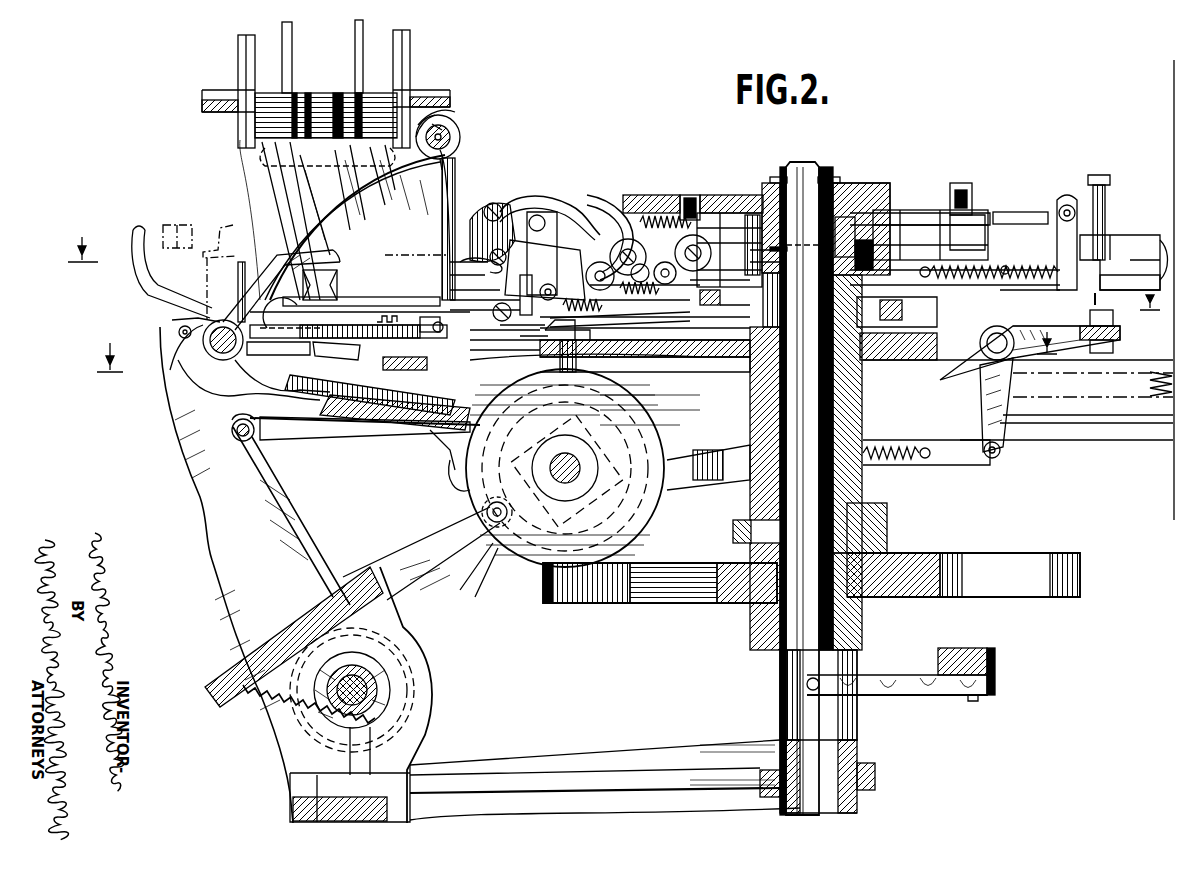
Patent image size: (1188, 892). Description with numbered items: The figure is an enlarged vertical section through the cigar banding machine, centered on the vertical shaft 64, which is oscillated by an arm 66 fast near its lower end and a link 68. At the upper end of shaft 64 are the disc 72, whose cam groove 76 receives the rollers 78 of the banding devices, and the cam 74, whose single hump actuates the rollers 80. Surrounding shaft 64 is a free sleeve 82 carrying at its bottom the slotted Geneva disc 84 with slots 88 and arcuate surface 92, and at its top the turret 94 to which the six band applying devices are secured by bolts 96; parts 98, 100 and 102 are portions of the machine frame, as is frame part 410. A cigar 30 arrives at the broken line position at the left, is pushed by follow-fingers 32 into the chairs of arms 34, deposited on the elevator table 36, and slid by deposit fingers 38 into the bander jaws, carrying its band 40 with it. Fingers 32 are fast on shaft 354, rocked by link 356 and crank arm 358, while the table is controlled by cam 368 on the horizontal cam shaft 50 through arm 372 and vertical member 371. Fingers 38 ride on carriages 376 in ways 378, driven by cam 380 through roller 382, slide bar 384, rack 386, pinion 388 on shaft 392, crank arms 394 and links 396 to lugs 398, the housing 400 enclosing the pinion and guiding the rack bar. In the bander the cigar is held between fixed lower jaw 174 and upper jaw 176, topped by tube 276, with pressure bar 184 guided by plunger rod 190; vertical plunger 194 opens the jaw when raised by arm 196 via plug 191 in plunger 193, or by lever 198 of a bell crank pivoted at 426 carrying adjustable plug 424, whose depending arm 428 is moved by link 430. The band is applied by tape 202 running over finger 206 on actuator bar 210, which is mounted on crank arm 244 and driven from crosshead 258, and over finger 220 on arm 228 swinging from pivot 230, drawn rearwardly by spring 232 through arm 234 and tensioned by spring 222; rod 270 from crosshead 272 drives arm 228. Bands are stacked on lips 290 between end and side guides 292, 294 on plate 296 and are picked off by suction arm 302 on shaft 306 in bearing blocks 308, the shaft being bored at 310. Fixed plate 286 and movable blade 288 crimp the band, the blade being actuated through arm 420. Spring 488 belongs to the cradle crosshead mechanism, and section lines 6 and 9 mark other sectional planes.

The section line 6 is at (614, 284).
The section line 9 is at (577, 363).
The cigar 30 is at (176, 225).
The follow-fingers 32 is at (133, 238).
The arms 34 is at (224, 225).
The elevator table 36 is at (375, 300).
The deposit fingers 38 is at (244, 262).
The band 40 is at (323, 98).
The horizontal cam shaft 50 is at (560, 460).
The vertical shaft 64 is at (815, 160).
The arm 66 is at (915, 696).
The link 68 is at (962, 648).
The disc 72 is at (850, 192).
The cam 74 is at (838, 245).
The cam groove 76 is at (680, 195).
The rollers 78 is at (690, 195).
The rollers 80 is at (752, 225).
The sleeve 82 is at (750, 405).
The slotted disc 84 is at (650, 603).
The slots 88 is at (680, 603).
The arcuate surface 92 is at (582, 603).
The turret 94 is at (862, 310).
The bolts 96 is at (735, 308).
The frame portion 98 is at (548, 764).
The frame portion 100 is at (733, 528).
The frame portion 102 is at (863, 487).
The fixed lower jaw 174 is at (1110, 282).
The upper jaw 176 is at (450, 275).
The pressure bar 184 is at (1158, 252).
The plunger rod 190 is at (450, 300).
The adjustable plug 191 is at (545, 340).
The plunger 193 is at (590, 325).
The vertical plunger 194 is at (1108, 298).
The arm 196 is at (665, 325).
The lever 198 is at (1030, 322).
The tape 202 is at (545, 215).
The finger 206 is at (485, 222).
The actuator bar 210 is at (535, 198).
The finger 220 is at (525, 323).
The tension spring 222 is at (630, 268).
The arm 228 is at (550, 265).
The pivot 230 is at (493, 202).
The spring 232 is at (990, 270).
The arm 234 is at (1060, 272).
The crank arm 244 is at (600, 225).
The crosshead 258 is at (770, 200).
The rod 270 is at (915, 215).
The crosshead 272 is at (760, 230).
The vertical tube 276 is at (1105, 200).
The fixed plate 286 is at (483, 294).
The movable blade 288 is at (412, 330).
The lips 290 is at (270, 158).
The end guides 292 is at (238, 63).
The side guides 294 is at (356, 42).
The plate 296 is at (225, 112).
The suction arm 302 is at (444, 224).
The shaft 306 is at (452, 137).
The bearing blocks 308 is at (433, 118).
The bore 310 is at (444, 130).
The shaft 354 is at (222, 352).
The link 356 is at (265, 395).
The crank arm 358 is at (178, 345).
The cam 368 is at (330, 313).
The vertical member 371 is at (325, 437).
The arm 372 is at (395, 430).
The carriages 376 is at (450, 408).
The ways 378 is at (395, 372).
The cam 380 is at (625, 410).
The roller 382 is at (515, 570).
The slide bar 384 is at (462, 580).
The rack 386 is at (282, 624).
The pinion 388 is at (340, 648).
The shaft 392 is at (360, 695).
The crank arms 394 is at (300, 537).
The links 396 is at (300, 442).
The lugs 398 is at (530, 375).
The housing 400 is at (395, 627).
The frame part 410 is at (690, 360).
The arm 420 is at (450, 470).
The adjustable plug 424 is at (1092, 314).
The pivot 426 is at (998, 328).
The depending arm 428 is at (1005, 400).
The link 430 is at (715, 440).
The spring 488 is at (1152, 370).